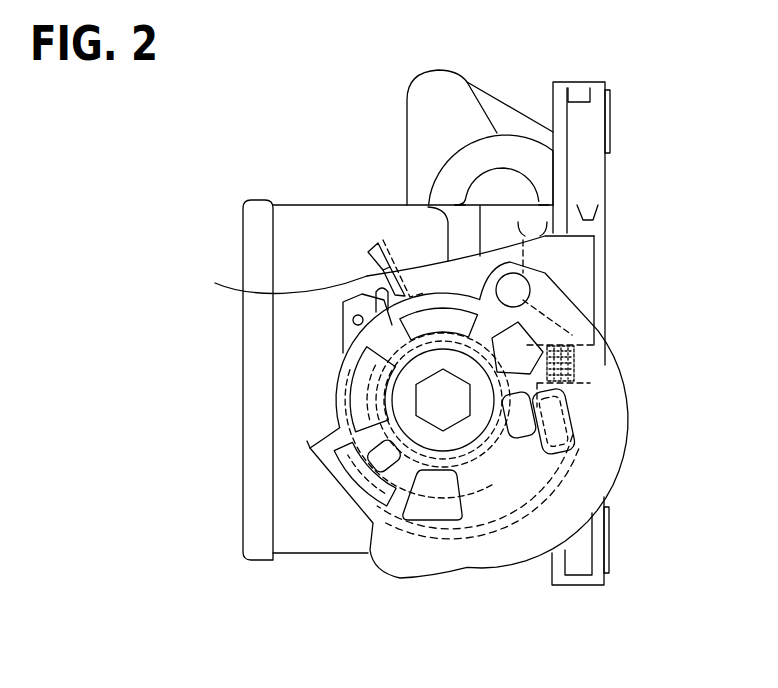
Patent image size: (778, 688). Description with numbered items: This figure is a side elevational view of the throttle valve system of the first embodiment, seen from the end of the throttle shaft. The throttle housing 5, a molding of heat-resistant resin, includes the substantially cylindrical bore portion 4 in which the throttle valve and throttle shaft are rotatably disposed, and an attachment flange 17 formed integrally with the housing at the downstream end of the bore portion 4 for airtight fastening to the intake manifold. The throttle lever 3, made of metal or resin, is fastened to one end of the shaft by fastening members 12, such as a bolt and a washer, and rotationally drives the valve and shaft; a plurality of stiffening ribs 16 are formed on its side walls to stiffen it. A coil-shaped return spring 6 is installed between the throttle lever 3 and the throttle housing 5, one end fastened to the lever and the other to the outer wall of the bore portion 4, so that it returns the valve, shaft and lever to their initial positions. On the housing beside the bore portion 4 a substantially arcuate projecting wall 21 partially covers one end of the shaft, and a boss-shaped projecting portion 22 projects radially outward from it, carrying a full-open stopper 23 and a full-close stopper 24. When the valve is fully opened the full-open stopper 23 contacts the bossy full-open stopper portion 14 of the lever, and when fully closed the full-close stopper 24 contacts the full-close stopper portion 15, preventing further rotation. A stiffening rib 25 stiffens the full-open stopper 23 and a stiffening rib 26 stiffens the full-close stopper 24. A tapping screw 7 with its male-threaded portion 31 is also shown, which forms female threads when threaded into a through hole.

The throttle lever 3 is at (396, 586).
The bore portion 4 is at (297, 205).
The throttle housing 5 is at (259, 185).
The return spring 6 is at (338, 366).
The tapping screw 7 is at (639, 363).
The male-threaded portion 31 is at (578, 372).
The fastening members 12 is at (435, 398).
The full-open stopper portion 14 is at (307, 441).
The full-close stopper portion 15 is at (583, 388).
The stiffening ribs 16 is at (497, 500).
The attachment flange 17 is at (600, 82).
The projecting wall 21 is at (424, 292).
The projecting portion 22 is at (422, 238).
The full-open stopper 23 is at (225, 285).
The full-close stopper 24 is at (580, 285).
The stiffening rib 25 is at (483, 250).
The stiffening rib 26 is at (585, 224).